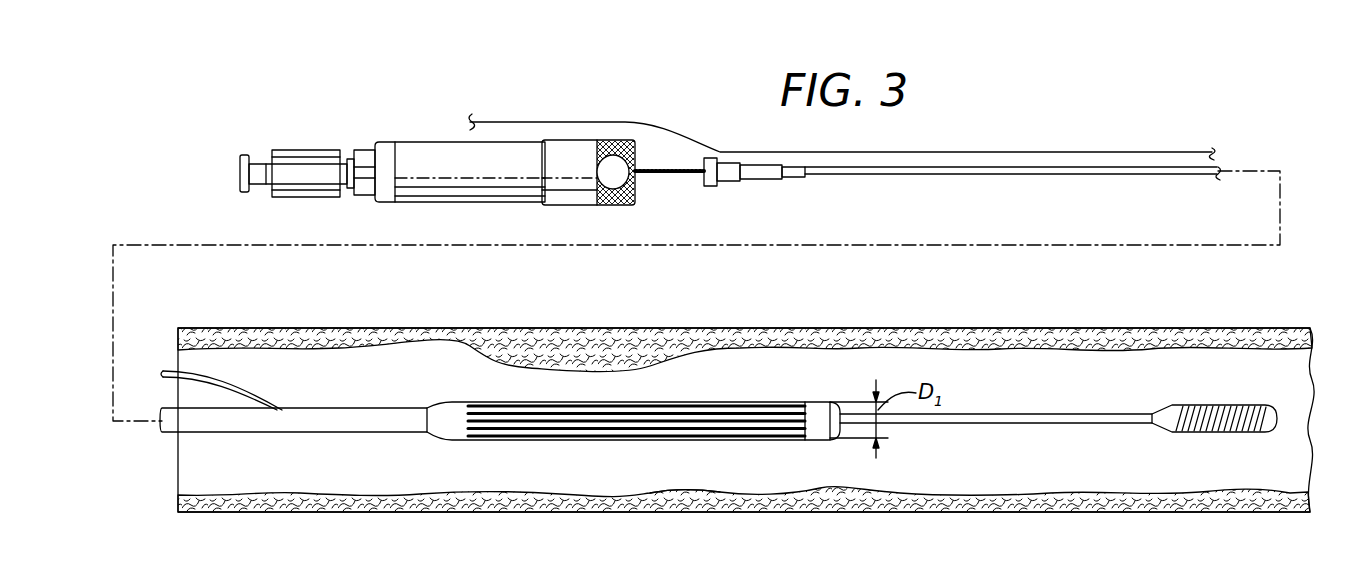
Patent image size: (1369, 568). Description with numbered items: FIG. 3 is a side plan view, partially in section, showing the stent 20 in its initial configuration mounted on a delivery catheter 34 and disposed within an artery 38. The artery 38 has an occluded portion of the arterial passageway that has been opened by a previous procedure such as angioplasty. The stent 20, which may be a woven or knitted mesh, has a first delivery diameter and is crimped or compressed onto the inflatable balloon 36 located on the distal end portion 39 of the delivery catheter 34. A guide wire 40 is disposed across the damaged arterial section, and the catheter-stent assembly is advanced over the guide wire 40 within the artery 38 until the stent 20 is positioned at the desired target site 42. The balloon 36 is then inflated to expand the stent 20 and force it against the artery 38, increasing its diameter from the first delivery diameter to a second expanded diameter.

The stent 20 is at (436, 410).
The delivery catheter 34 is at (873, 176).
The balloon 36 is at (823, 440).
The artery 38 is at (700, 328).
The distal end portion 39 is at (838, 402).
The guide wire 40 is at (178, 368).
The target site 42 is at (670, 490).